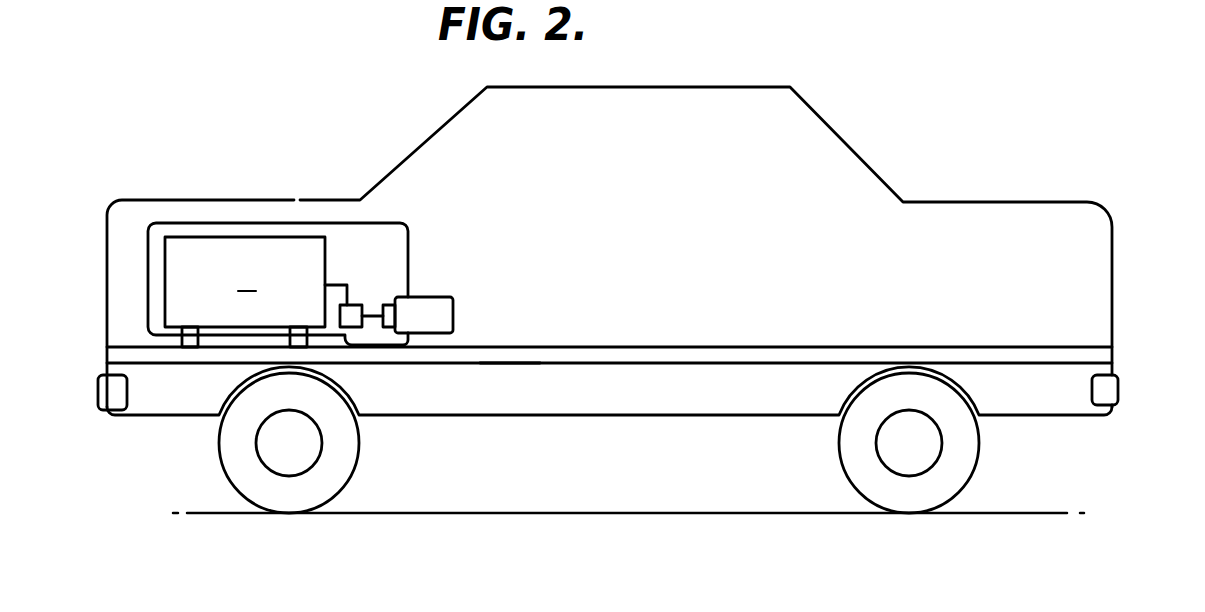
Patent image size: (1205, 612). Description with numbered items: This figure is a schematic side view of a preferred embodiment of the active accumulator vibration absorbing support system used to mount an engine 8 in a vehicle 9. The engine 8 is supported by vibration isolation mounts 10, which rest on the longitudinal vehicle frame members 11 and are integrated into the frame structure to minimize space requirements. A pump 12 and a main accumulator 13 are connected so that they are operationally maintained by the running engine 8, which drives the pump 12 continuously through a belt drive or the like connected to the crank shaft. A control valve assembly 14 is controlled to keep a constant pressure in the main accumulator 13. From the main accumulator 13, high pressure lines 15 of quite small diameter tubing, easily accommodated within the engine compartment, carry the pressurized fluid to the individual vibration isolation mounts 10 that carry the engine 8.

The engine 8 is at (245, 282).
The vehicle 9 is at (736, 88).
The vibration isolation mounts 10 is at (288, 338).
The longitudinal vehicle frame members 11 is at (503, 356).
The pump 12 is at (352, 312).
The main accumulator 13 is at (431, 302).
The control valve assembly 14 is at (388, 300).
The high pressure lines 15 is at (250, 224).